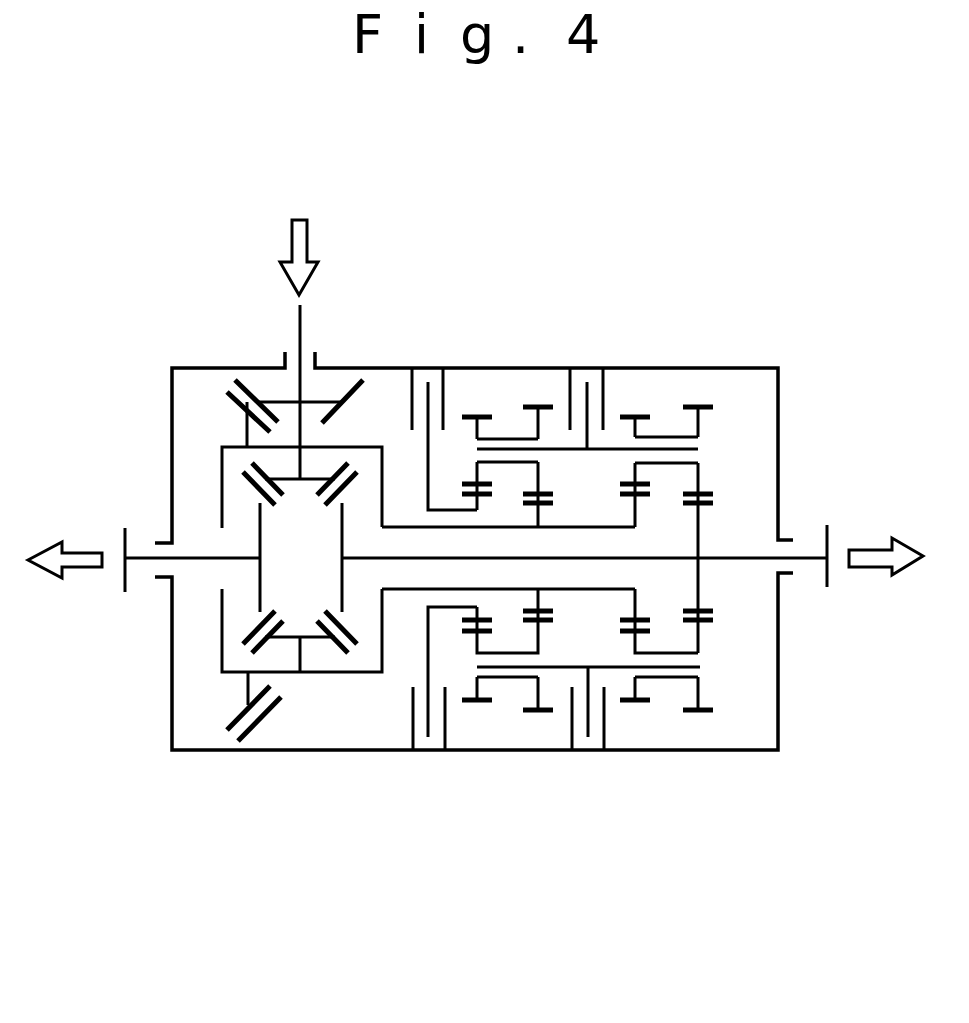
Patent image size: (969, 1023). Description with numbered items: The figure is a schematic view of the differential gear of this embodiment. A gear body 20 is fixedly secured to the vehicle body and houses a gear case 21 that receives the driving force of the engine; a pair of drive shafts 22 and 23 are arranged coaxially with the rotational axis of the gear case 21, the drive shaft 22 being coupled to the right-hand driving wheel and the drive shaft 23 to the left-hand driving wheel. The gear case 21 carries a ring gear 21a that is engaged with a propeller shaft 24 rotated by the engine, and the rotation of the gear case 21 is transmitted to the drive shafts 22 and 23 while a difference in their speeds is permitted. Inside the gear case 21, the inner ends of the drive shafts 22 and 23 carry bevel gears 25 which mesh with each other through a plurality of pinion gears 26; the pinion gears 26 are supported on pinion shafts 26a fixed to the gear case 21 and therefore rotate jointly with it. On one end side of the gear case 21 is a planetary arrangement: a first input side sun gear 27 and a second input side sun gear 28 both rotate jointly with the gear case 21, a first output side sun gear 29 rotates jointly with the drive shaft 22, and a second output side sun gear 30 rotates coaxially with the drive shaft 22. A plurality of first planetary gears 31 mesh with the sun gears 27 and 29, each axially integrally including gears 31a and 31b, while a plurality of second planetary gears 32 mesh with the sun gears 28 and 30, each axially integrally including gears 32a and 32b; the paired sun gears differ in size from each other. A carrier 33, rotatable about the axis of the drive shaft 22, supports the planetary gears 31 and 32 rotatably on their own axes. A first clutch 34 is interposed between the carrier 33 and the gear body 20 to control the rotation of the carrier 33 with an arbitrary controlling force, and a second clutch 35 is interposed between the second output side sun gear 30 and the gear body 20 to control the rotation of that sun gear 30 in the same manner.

The gear body 20 is at (202, 755).
The gear case 21 is at (335, 650).
The ring gear 21a is at (225, 400).
The drive shaft 22 is at (810, 553).
The drive shaft 23 is at (143, 553).
The propeller shaft 24 is at (300, 340).
The bevel gear 25 is at (330, 503).
The pinion gear 26 is at (333, 463).
The pinion shaft 26a is at (305, 662).
The first input side sun gear 27 is at (612, 700).
The second input side sun gear 28 is at (557, 665).
The first output side sun gear 29 is at (713, 622).
The second output side sun gear 30 is at (452, 640).
The first planetary gear 31 is at (662, 437).
The gear 31a is at (635, 415).
The gear 31b is at (700, 405).
The second planetary gear 32 is at (503, 437).
The gear 32a is at (538, 405).
The gear 32b is at (475, 412).
The carrier 33 is at (700, 447).
The first clutch 34 is at (587, 380).
The second clutch 35 is at (428, 367).